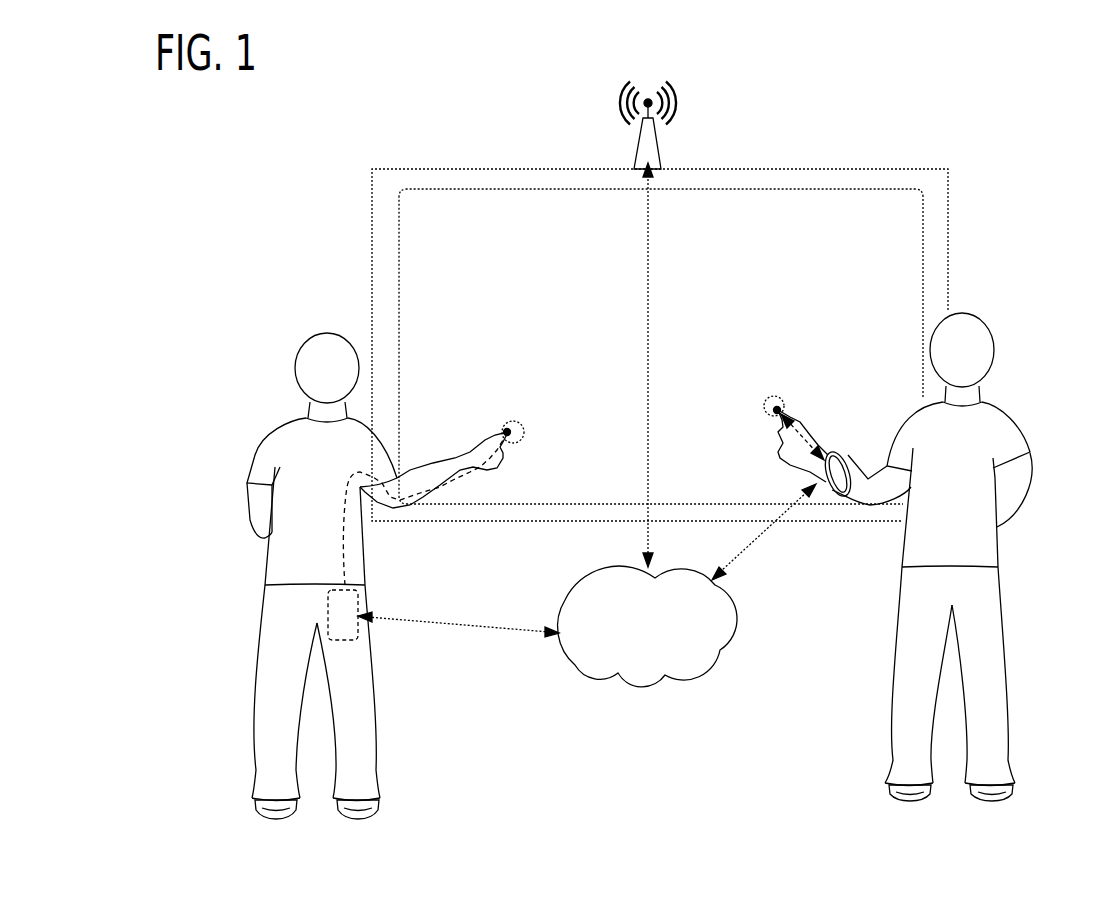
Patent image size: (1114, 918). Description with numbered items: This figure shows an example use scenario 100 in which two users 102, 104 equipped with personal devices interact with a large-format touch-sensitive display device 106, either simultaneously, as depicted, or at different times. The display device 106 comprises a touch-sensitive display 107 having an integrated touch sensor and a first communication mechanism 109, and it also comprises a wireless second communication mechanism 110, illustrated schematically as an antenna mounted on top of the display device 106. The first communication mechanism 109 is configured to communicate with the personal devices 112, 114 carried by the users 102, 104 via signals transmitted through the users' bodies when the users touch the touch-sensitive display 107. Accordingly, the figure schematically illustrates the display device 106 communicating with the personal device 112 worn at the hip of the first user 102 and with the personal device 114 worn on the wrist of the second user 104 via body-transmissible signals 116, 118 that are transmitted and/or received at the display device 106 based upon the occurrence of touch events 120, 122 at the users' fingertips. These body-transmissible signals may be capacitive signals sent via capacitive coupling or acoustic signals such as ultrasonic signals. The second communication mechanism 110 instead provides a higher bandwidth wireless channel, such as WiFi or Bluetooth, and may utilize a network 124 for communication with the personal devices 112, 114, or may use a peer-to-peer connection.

The system 100 is at (325, 242).
The user 102 is at (263, 440).
The user 104 is at (1005, 415).
The touch-sensitive display device 106 is at (432, 168).
The touch-sensitive display 107 is at (762, 190).
The first communication mechanism 109 is at (880, 255).
The second communication mechanism 110 is at (648, 97).
The personal device 112 is at (336, 584).
The personal device 114 is at (823, 515).
The body-transmissible signal 116 is at (432, 482).
The body-transmissible signal 118 is at (780, 427).
The touch event 120 is at (513, 418).
The touch event 122 is at (765, 407).
The network 124 is at (704, 638).